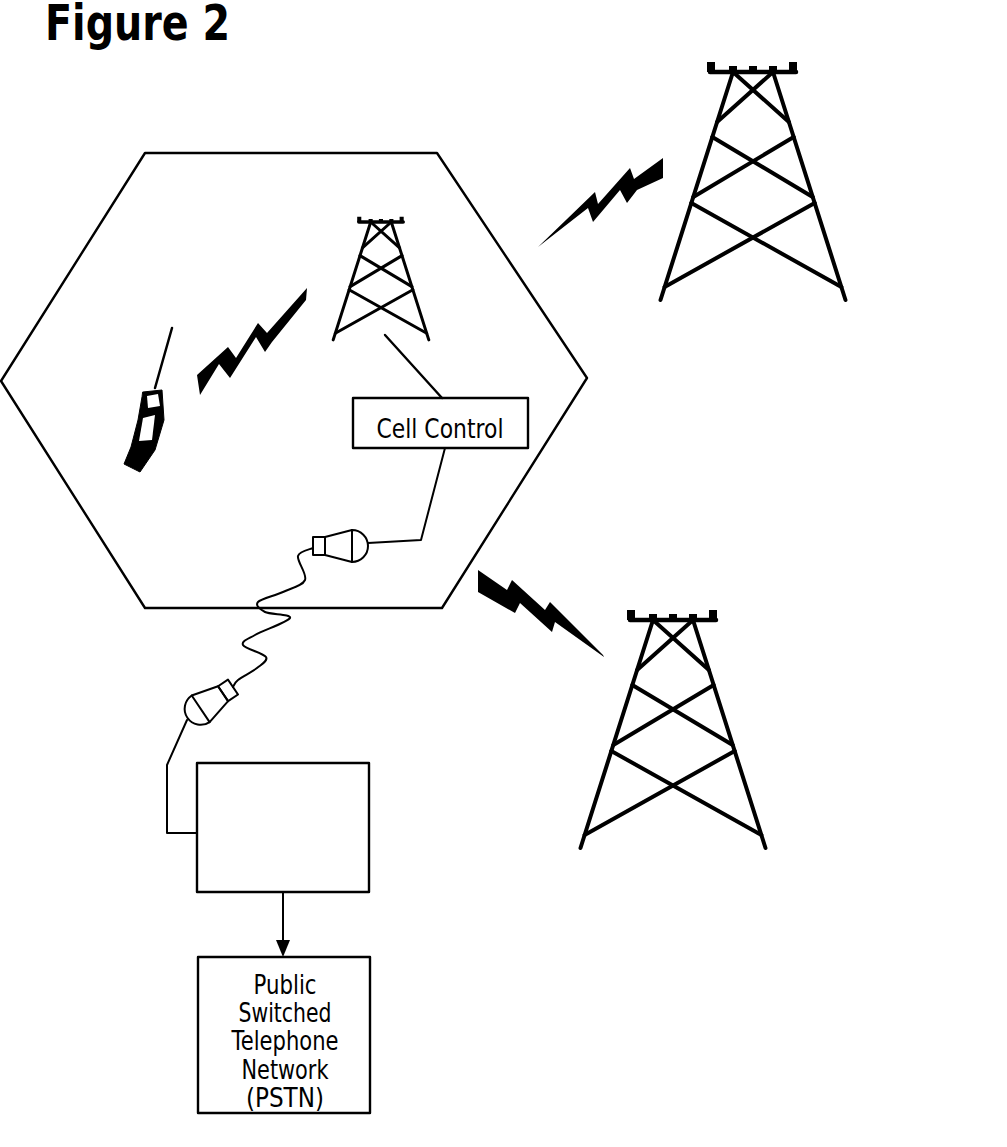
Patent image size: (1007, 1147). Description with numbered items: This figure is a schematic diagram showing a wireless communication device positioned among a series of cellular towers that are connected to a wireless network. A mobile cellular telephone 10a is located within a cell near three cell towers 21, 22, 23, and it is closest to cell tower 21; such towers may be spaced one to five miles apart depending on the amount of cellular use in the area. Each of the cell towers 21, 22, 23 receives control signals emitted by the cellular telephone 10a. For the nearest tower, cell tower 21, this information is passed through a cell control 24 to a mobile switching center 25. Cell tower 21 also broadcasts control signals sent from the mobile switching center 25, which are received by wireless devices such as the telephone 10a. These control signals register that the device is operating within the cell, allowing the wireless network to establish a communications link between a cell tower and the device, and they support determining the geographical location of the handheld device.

The mobile cellular telephone 10a is at (127, 413).
The cell tower 21 is at (410, 243).
The cell tower 22 is at (813, 107).
The cell tower 23 is at (745, 680).
The cell control 24 is at (280, 670).
The mobile switching center (MSC) 25 is at (358, 825).